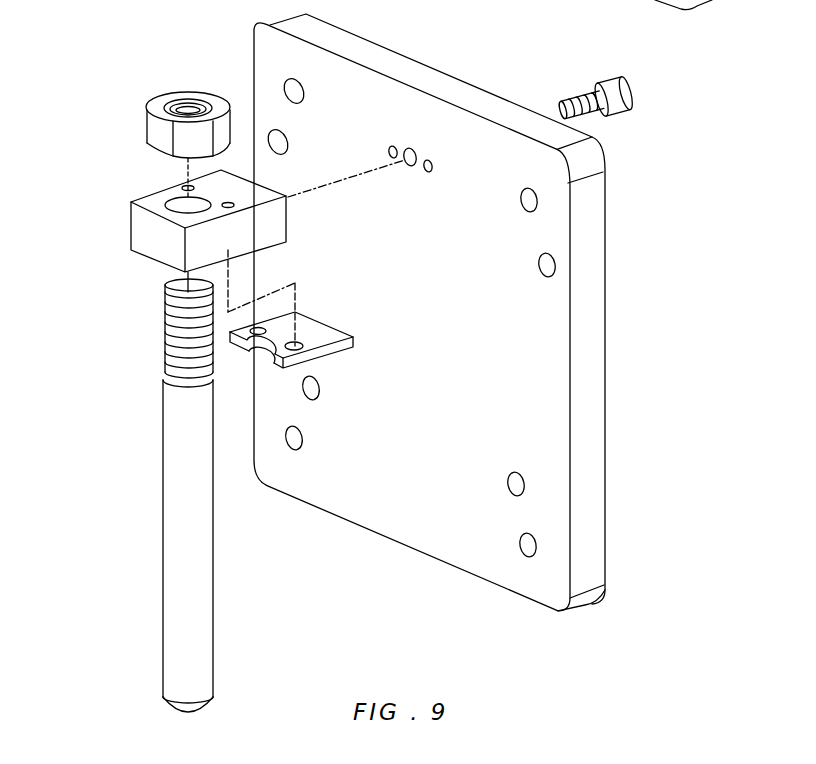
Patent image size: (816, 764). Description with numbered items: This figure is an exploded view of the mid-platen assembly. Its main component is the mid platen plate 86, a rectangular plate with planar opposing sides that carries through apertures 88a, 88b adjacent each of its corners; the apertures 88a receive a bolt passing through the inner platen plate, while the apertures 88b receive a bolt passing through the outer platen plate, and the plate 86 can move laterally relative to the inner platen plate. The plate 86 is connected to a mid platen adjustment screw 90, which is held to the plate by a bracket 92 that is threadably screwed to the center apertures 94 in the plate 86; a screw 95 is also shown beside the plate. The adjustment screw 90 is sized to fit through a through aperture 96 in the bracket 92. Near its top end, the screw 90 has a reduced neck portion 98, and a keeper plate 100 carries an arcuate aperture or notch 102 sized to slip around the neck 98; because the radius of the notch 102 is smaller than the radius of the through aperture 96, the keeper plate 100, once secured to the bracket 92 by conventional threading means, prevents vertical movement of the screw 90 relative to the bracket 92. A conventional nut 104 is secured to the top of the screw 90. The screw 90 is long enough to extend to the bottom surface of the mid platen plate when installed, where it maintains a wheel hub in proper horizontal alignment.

The mid platen plate 86 is at (609, 256).
The through apertures 88a is at (291, 83).
The through apertures 88b is at (275, 133).
The mid platen adjustment screw 90 is at (161, 431).
The bracket 92 is at (128, 222).
The center apertures 94 is at (411, 150).
The screw 95 is at (635, 104).
The through aperture 96 is at (180, 203).
The reduced neck portion 98 is at (170, 373).
The keeper plate 100 is at (226, 336).
The arcuate aperture/notch 102 is at (264, 347).
The nut 104 is at (143, 126).